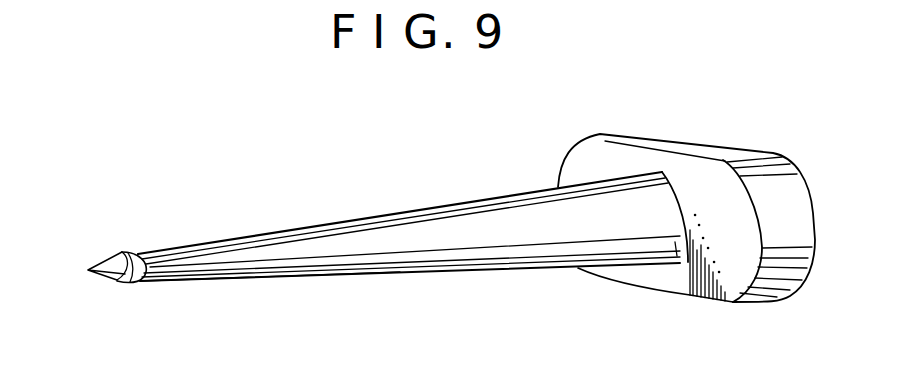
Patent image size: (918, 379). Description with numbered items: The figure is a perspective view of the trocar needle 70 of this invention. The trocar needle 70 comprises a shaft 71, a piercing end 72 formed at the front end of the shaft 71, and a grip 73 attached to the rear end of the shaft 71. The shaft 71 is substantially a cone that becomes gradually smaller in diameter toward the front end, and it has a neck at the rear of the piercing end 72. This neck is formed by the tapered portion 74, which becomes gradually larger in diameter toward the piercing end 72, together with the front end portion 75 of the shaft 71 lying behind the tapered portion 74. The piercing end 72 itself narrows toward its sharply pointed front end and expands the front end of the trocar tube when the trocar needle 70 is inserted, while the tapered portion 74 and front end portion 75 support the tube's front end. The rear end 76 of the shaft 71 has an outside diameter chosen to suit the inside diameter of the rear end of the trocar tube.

The trocar needle 70 is at (777, 147).
The shaft 71 is at (343, 252).
The piercing end 72 is at (110, 278).
The grip 73 is at (797, 257).
The tapered portion 74 is at (140, 258).
The front end portion 75 is at (153, 283).
The rear end 76 is at (676, 243).